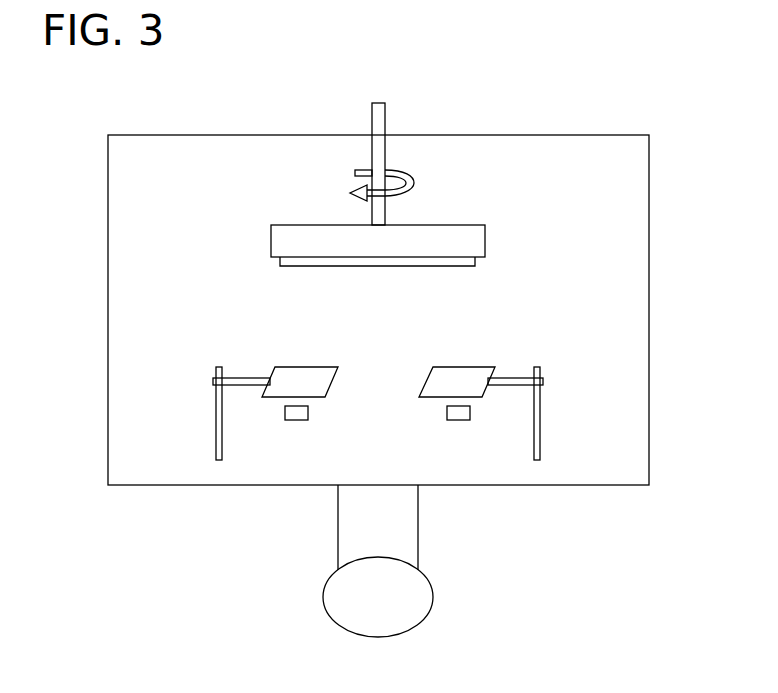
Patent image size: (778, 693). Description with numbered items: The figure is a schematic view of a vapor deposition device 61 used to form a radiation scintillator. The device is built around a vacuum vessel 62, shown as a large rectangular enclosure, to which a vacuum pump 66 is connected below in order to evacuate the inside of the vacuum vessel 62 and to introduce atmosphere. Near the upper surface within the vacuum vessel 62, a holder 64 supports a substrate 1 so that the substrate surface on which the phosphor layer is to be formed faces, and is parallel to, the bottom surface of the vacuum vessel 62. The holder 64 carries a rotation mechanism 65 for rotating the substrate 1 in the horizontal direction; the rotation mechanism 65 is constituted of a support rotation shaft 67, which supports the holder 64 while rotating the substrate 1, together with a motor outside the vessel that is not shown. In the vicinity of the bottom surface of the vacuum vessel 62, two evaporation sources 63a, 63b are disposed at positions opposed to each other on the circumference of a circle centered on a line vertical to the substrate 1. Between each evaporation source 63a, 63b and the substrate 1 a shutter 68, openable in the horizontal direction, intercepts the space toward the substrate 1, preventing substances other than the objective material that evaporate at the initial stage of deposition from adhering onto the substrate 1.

The substrate 1 is at (477, 266).
The vapor deposition device 61 is at (451, 92).
The vacuum vessel 62 is at (649, 183).
The evaporation source 63a is at (290, 420).
The evaporation source 63b is at (470, 420).
The holder 64 is at (477, 240).
The rotation mechanism 65 is at (390, 212).
The vacuum pump 66 is at (433, 595).
The support rotation shaft 67 is at (375, 101).
The shutter 68 is at (306, 367).